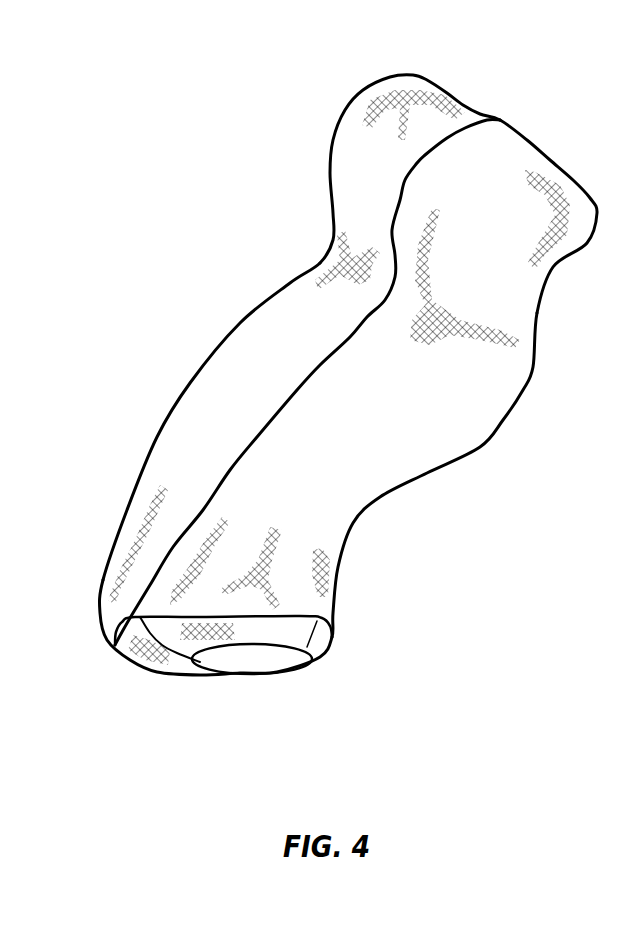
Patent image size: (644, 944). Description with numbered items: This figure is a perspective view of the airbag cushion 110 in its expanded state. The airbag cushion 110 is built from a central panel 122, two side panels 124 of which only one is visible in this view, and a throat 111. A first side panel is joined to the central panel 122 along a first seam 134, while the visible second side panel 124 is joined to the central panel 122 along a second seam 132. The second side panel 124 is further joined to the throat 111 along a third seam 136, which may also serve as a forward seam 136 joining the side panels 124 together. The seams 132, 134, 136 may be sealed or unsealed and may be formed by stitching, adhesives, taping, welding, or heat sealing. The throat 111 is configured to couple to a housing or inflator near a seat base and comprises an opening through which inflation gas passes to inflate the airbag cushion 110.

The airbag cushion 110 is at (327, 379).
The throat 111 is at (290, 630).
The central panel 122 is at (230, 395).
The side panel 124 is at (412, 417).
The second seam 132 is at (445, 137).
The first seam 134 is at (333, 140).
The third seam 136 is at (178, 616).